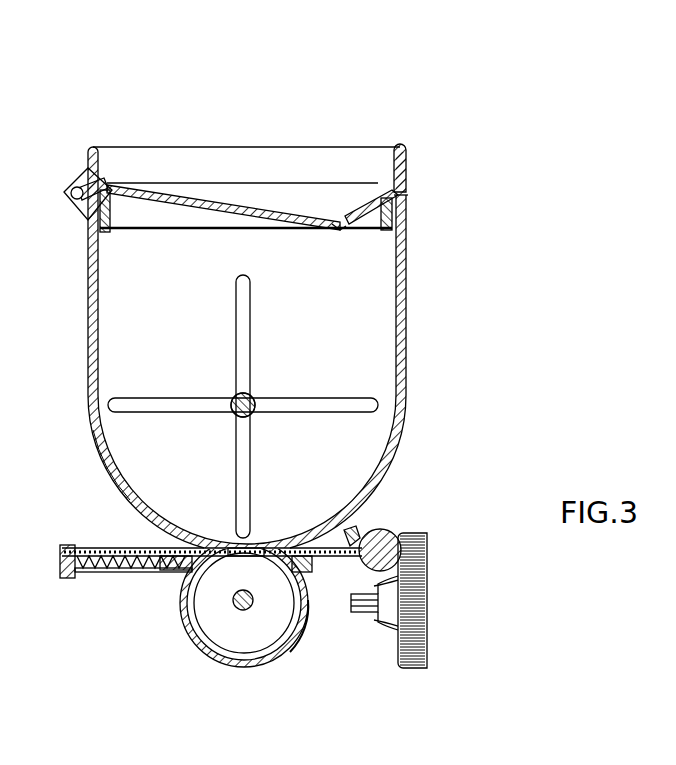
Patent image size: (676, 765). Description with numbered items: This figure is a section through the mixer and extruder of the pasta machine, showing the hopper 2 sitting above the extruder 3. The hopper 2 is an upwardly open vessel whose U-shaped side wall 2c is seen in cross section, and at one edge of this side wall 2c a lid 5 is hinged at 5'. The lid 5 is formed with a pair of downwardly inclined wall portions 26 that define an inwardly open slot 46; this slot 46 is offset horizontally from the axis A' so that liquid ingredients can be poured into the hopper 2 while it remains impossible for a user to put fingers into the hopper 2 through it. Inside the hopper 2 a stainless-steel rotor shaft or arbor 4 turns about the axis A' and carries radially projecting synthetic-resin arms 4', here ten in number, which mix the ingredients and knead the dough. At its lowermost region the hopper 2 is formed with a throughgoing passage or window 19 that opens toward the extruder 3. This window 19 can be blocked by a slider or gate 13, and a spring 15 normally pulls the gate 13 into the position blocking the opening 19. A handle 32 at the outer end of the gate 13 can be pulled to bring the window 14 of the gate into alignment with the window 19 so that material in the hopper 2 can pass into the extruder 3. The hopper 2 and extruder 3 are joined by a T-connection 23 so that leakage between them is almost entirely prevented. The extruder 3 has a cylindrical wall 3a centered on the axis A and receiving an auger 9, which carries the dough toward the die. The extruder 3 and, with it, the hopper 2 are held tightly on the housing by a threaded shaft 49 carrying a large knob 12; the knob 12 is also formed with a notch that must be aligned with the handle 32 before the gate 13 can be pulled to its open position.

The hopper 2 is at (406, 232).
The U-shaped side wall 2c is at (96, 440).
The lid 5 is at (261, 169).
The hinge 5' is at (62, 200).
The downwardly inclined wall portions 26 is at (279, 212).
The slot 46 is at (341, 233).
The rotor shaft 4 is at (243, 429).
The radially projecting arms 4' is at (265, 406).
The axis A' is at (261, 385).
The window 14 is at (150, 548).
The spring 15 is at (130, 571).
The passage 19 is at (258, 546).
The gate 13 is at (352, 532).
The extruder 3 is at (283, 656).
The cylindrical wall 3a is at (300, 645).
The auger 9 is at (250, 627).
The axis A is at (242, 585).
The T-connection 23 is at (303, 558).
The handle 32 is at (386, 530).
The threaded shaft 49 is at (366, 613).
The knob 12 is at (430, 619).